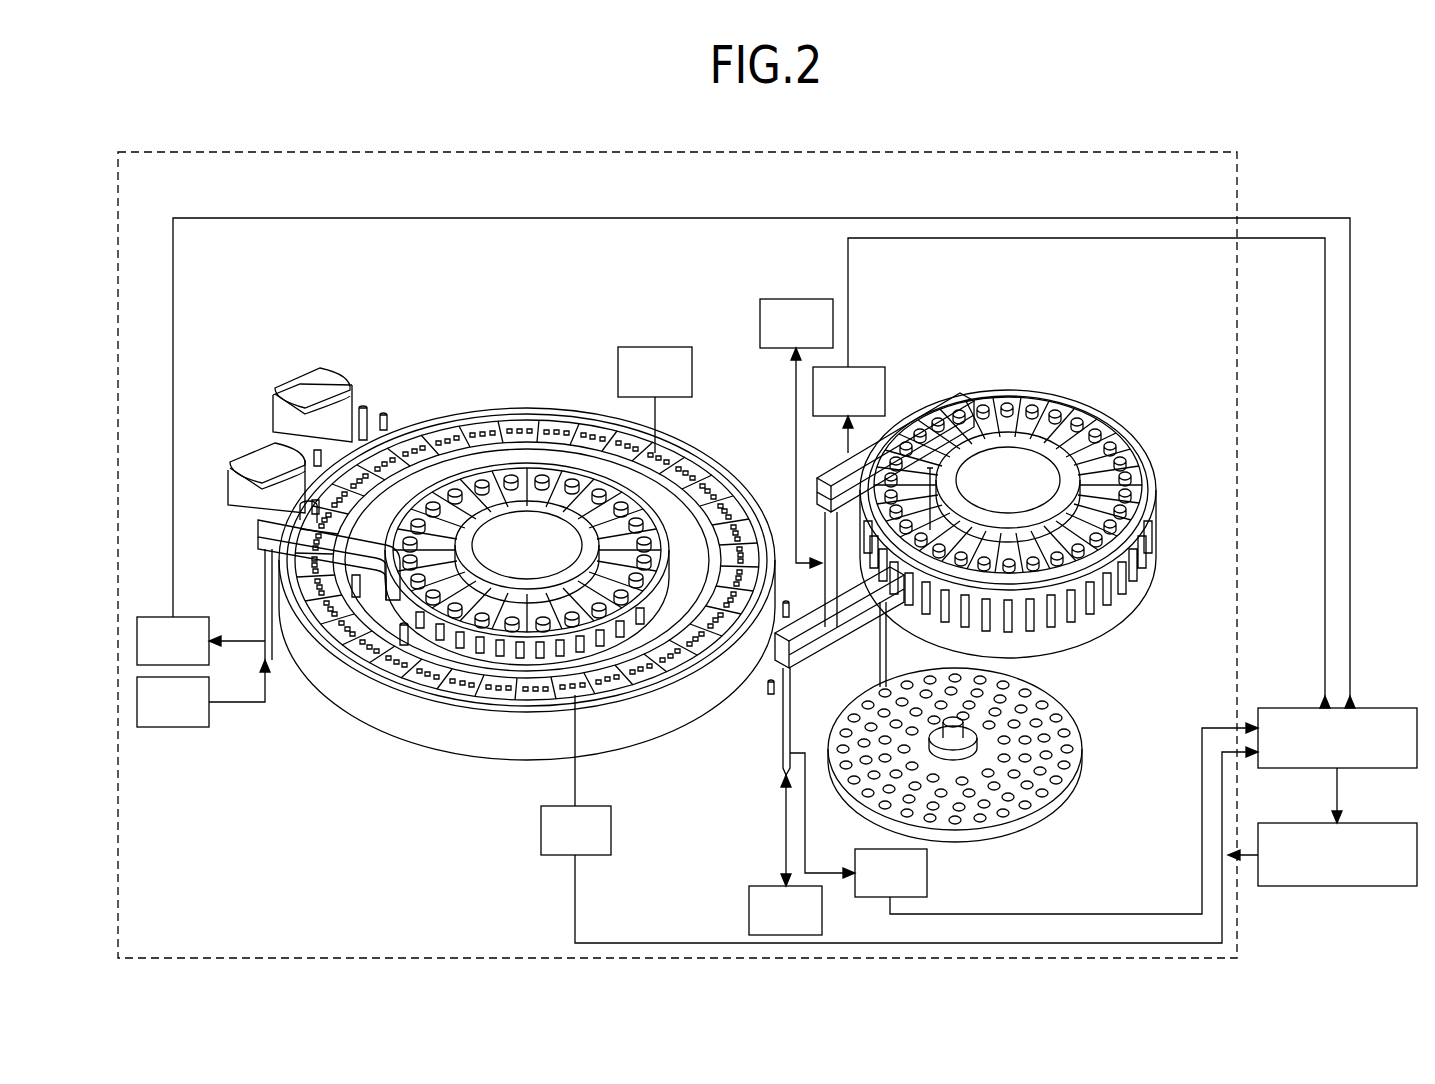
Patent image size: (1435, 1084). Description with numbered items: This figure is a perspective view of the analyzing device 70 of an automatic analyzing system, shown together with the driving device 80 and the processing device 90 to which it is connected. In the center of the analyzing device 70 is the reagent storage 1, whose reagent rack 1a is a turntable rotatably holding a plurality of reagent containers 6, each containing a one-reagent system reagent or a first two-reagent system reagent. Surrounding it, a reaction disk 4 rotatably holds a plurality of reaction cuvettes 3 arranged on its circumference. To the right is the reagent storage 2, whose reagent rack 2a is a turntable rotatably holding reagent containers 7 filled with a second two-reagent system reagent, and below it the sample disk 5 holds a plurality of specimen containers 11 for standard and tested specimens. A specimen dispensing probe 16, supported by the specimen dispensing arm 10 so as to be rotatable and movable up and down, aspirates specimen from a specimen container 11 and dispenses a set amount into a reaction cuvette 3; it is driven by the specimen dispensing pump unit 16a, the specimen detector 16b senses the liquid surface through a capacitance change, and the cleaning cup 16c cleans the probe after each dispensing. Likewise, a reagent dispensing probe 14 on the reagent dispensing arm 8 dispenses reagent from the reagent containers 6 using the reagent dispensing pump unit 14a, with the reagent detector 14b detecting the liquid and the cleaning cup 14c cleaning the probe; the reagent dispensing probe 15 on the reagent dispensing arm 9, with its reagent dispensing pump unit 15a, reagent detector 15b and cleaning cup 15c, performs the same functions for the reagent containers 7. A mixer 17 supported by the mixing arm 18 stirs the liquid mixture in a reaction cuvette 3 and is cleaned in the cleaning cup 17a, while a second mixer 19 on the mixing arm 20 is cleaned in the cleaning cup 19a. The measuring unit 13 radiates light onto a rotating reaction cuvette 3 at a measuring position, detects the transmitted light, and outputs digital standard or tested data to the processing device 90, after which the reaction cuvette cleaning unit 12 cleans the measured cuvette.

The reagent storage 1 is at (527, 440).
The reagent rack 1a is at (604, 477).
The reagent storage 2 is at (1122, 332).
The reagent rack 2a is at (1055, 395).
The reaction cuvettes 3 is at (680, 700).
The reaction disk 4 is at (693, 465).
The sample disk 5 is at (1053, 803).
The reagent containers 6 is at (560, 690).
The reagent containers 7 is at (1128, 432).
The reagent dispensing arm 8 is at (330, 648).
The reagent dispensing arm 9 is at (908, 440).
The specimen dispensing arm 10 is at (850, 650).
The specimen containers 11 is at (1005, 812).
The reaction cuvette cleaning unit 12 is at (655, 400).
The measuring unit 13 is at (576, 775).
The reagent dispensing probe 14 is at (357, 597).
The reagent dispensing pump unit 14a is at (203, 693).
The reagent detector 14b is at (201, 641).
The cleaning cup 14c is at (402, 646).
The reagent dispensing probe 15 is at (975, 462).
The reagent dispensing pump unit 15a is at (796, 433).
The reagent detector 15b is at (849, 410).
The cleaning cup 15c is at (786, 600).
The specimen dispensing probe 16 is at (880, 630).
The specimen dispensing pump unit 16a is at (785, 855).
The specimen detector 16b is at (891, 873).
The cleaning cup 16c is at (770, 694).
The mixer 17 is at (300, 500).
The cleaning cup 17a is at (285, 398).
The mixing arm 18 is at (252, 452).
The mixer 19 is at (363, 406).
The cleaning cup 19a is at (386, 413).
The mixing arm 20 is at (322, 378).
The analyzing device 70 is at (820, 153).
The driving device 80 is at (1372, 823).
The processing device 90 is at (1372, 708).